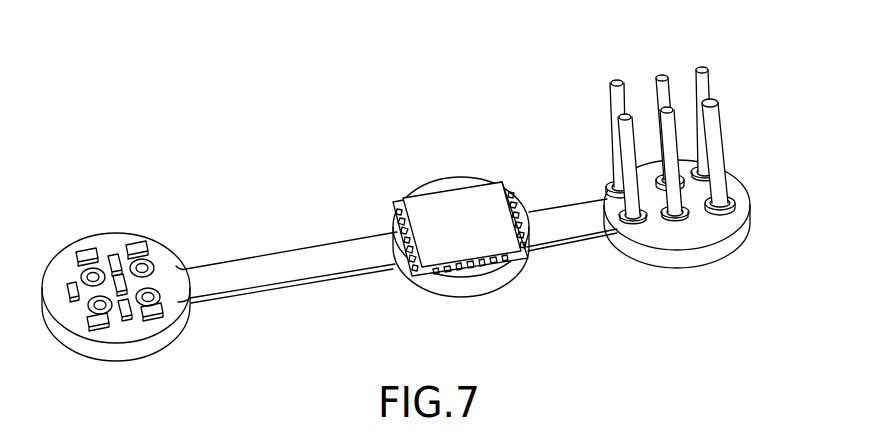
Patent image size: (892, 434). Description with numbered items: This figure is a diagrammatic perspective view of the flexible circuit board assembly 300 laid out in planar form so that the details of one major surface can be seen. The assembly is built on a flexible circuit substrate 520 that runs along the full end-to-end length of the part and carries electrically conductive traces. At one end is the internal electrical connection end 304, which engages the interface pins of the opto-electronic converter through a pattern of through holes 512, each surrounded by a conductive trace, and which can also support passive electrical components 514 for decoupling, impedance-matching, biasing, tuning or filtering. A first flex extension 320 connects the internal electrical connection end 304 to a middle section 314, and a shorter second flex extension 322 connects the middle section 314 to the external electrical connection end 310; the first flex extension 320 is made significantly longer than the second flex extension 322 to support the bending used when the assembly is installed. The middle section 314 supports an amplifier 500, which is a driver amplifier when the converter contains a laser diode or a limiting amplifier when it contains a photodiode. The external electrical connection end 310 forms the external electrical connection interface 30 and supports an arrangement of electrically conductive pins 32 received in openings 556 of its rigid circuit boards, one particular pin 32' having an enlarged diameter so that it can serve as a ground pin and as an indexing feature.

The flexible circuit board assembly 300 is at (415, 119).
The internal electrical connection end 304 is at (125, 361).
The through holes 512 is at (80, 277).
The electrical components 514 is at (148, 250).
The first flex extension 320 is at (267, 253).
The flexible circuit substrate 520 is at (273, 287).
The middle section 314 is at (451, 177).
The amplifier 500 is at (402, 197).
The second flex extension 322 is at (572, 240).
The external electrical connection end 310 is at (698, 268).
The openings 556 is at (735, 210).
The external electrical connection interface 30 is at (722, 100).
The electrically conductive pins 32 is at (695, 110).
The indexing pin 32' is at (710, 157).